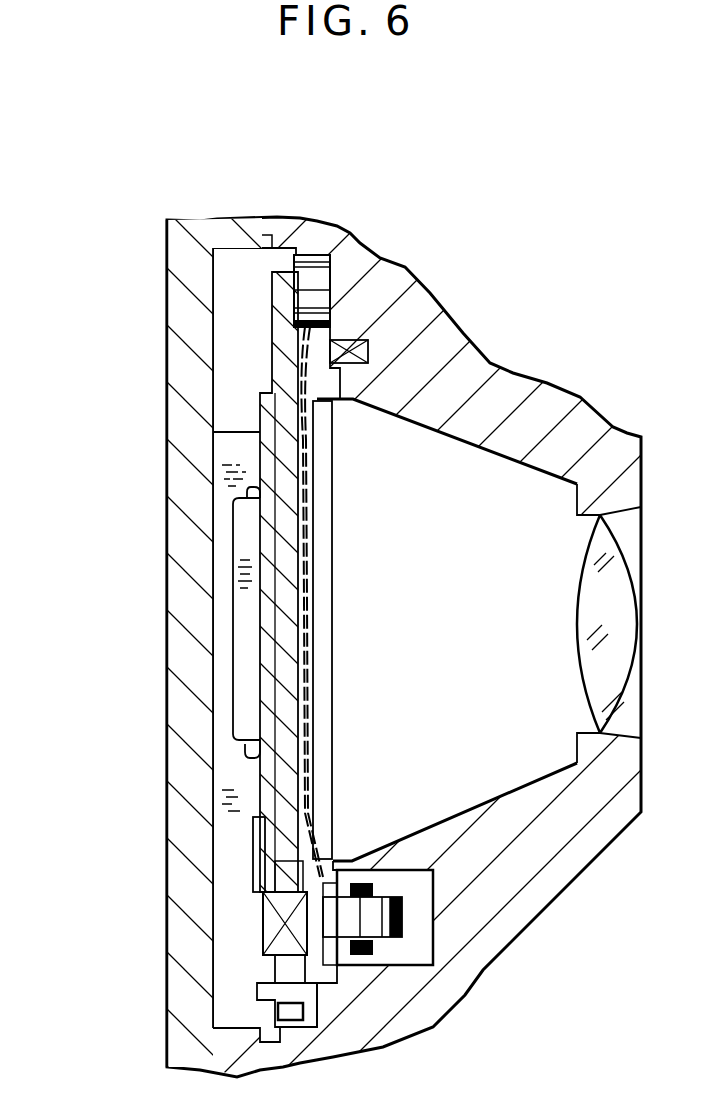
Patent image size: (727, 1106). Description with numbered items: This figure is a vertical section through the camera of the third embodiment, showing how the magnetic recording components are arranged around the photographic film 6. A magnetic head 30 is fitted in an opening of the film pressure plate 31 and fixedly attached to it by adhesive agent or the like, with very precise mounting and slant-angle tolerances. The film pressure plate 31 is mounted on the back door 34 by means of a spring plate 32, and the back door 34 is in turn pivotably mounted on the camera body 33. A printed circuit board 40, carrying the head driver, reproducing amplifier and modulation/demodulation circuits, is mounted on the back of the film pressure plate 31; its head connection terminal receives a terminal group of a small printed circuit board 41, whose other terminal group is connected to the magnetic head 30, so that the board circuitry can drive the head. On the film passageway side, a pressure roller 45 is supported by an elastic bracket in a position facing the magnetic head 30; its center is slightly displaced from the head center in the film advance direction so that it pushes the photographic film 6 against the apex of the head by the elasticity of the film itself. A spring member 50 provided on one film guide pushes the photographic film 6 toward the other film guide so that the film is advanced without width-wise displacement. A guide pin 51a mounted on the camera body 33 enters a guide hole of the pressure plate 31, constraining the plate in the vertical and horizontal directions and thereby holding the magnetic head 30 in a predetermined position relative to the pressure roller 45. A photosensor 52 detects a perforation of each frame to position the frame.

The photographic film 6 is at (308, 612).
The magnetic head 30 is at (263, 955).
The film pressure plate 31 is at (237, 373).
The spring plate 32 is at (235, 783).
The camera body 33 is at (199, 178).
The back door 34 is at (167, 647).
The printed circuit board 40 is at (260, 453).
The small printed circuit board 41 is at (262, 875).
The pressure roller 45 is at (412, 938).
The spring member 50 is at (310, 282).
The guide pin 51a is at (260, 999).
The photosensor 52 is at (350, 340).